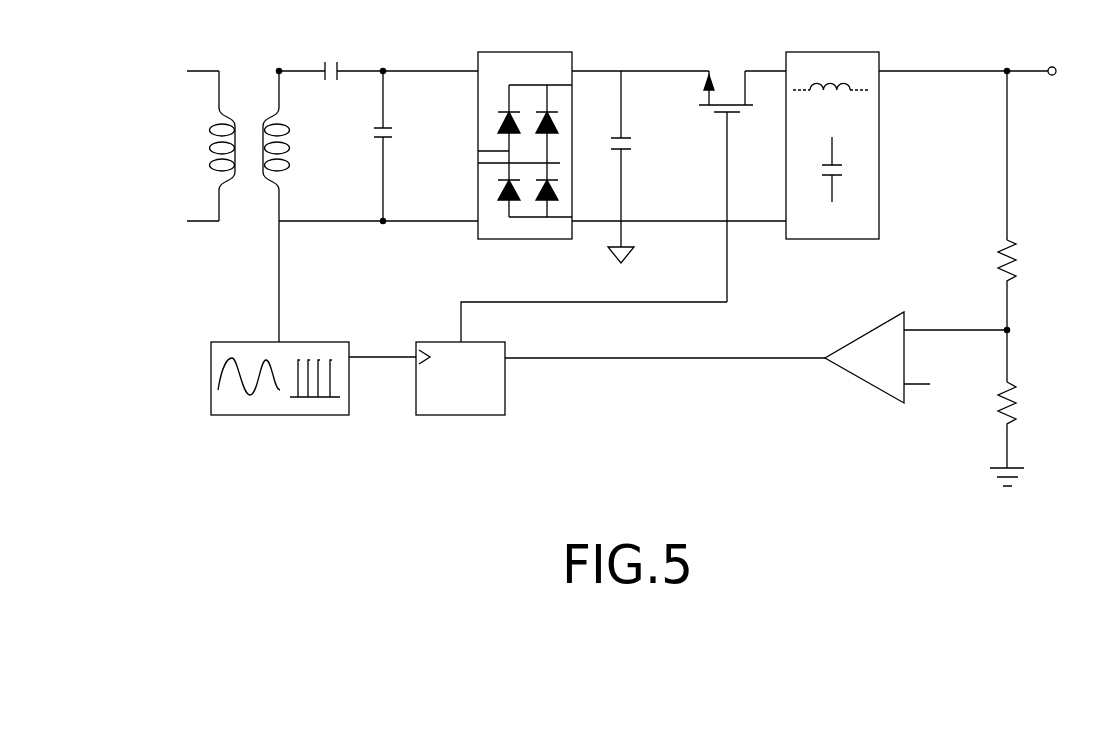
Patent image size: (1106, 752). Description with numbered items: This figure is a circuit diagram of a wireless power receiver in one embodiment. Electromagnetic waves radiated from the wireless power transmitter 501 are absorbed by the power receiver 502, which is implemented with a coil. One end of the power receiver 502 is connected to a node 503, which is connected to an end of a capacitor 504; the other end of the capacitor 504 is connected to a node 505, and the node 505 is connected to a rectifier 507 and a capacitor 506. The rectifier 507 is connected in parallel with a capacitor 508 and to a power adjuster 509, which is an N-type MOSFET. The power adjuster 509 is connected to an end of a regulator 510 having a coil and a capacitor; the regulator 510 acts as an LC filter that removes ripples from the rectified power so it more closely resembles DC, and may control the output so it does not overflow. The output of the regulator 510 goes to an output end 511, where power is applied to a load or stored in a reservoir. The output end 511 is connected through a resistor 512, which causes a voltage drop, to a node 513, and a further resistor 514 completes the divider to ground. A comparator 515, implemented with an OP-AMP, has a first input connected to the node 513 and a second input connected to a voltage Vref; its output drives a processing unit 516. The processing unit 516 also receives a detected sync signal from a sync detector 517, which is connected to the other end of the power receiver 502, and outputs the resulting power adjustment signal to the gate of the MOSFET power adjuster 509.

The wireless power transmitter 501 is at (207, 156).
The power receiver 502 is at (290, 164).
The node 503 is at (279, 66).
The capacitor 504 is at (330, 58).
The node 505 is at (383, 66).
The capacitor 506 is at (396, 133).
The rectifier 507 is at (525, 50).
The capacitor 508 is at (634, 146).
The power adjuster 509 is at (728, 64).
The regulator 510 is at (832, 50).
The output end 511 is at (1007, 66).
The resistor 512 is at (1020, 262).
The node 513 is at (1012, 330).
The resistor 514 is at (1020, 409).
The comparator 515 is at (904, 310).
The processing unit 516 is at (462, 418).
The sync detector 517 is at (280, 418).